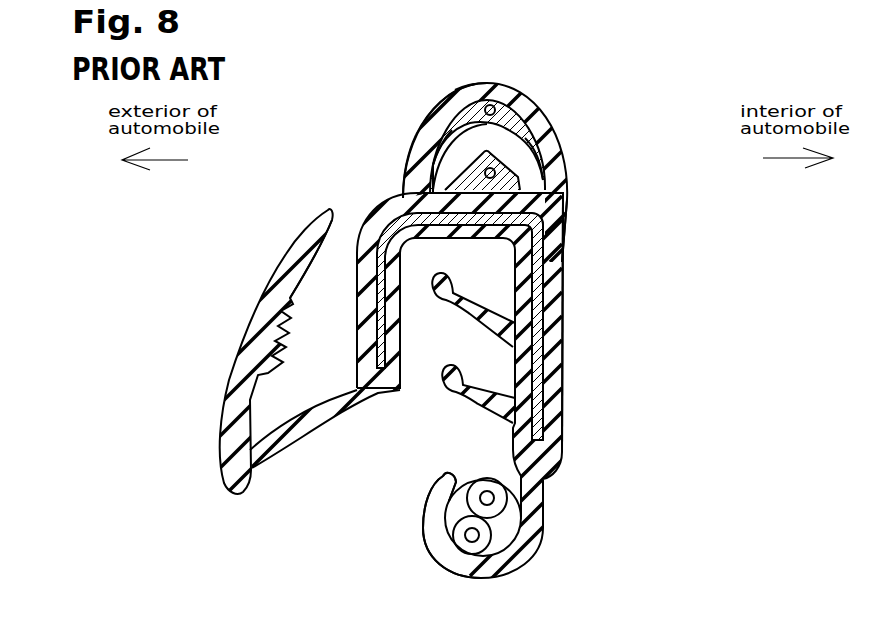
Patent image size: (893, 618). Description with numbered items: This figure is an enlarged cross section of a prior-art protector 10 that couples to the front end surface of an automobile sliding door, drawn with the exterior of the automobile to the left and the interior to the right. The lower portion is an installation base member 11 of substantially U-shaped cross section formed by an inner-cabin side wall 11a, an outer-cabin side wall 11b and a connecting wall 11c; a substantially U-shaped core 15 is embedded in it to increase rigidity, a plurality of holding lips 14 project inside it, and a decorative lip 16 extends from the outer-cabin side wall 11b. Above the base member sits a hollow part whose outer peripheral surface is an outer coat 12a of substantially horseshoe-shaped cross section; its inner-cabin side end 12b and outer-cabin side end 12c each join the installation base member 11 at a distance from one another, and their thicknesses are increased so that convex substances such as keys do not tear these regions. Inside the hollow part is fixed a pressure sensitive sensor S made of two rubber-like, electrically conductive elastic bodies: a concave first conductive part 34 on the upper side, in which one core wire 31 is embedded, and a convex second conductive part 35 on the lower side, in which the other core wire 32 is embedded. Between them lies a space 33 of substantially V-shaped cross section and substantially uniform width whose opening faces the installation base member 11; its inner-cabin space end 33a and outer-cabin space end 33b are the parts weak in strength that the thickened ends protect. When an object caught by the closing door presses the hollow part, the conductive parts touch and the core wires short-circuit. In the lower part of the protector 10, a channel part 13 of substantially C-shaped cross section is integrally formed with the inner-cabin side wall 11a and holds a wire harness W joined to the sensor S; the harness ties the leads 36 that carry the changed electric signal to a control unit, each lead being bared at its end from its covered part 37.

The protector 10 is at (619, 114).
The installation base member 11 is at (563, 432).
The inner-cabin side wall 11a is at (564, 364).
The outer-cabin side wall 11b is at (360, 292).
The connecting wall 11c is at (484, 238).
The outer coat 12a is at (510, 86).
The inner-cabin side end 12b is at (557, 215).
The outer-cabin side end 12c is at (416, 191).
The channel part 13 is at (428, 494).
The holding lip 14 is at (448, 310).
The core 15 is at (378, 268).
The decorative lip 16 is at (230, 343).
The core wire 31 is at (500, 95).
The core wire 32 is at (545, 190).
The space 33 is at (523, 113).
The inner-cabin space end 33a is at (546, 184).
The outer-cabin space end 33b is at (420, 183).
The first conductive part 34 is at (440, 118).
The second conductive part 35 is at (508, 160).
The lead 36 is at (500, 500).
The covered part 37 is at (503, 515).
The wire harness W is at (505, 535).
The sensor S is at (460, 88).